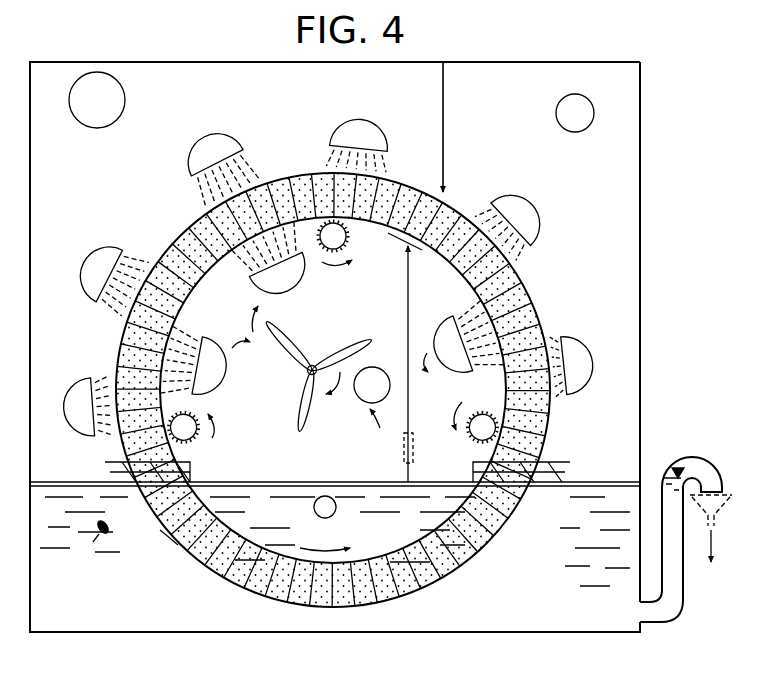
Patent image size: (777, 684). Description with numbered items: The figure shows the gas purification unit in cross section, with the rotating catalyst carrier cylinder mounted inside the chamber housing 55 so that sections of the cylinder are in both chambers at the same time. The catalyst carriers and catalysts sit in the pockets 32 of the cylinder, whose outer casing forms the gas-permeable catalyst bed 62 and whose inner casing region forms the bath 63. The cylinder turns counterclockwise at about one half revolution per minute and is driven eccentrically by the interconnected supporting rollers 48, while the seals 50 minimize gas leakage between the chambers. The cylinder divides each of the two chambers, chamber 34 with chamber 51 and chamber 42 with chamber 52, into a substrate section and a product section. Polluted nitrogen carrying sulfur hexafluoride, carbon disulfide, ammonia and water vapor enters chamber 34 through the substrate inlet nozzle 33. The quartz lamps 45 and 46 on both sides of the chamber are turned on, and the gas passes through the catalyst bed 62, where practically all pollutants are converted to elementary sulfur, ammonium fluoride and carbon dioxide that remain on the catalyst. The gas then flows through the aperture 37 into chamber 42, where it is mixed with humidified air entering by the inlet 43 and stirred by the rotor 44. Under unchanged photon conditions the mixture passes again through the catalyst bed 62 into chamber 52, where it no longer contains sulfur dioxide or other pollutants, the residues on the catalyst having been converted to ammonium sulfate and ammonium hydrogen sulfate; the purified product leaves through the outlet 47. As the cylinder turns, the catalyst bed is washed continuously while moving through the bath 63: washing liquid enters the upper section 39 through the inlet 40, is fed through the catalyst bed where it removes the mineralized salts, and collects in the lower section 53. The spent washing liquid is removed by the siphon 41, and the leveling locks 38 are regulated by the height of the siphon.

The pockets 32 is at (540, 296).
The substrate inlet nozzle 33 is at (556, 116).
The chamber 34 is at (569, 247).
The aperture 37 is at (403, 450).
The seals 38 is at (416, 182).
The upper section of the bath 39 is at (144, 605).
The inlet 40 is at (320, 497).
The siphon 41 is at (690, 456).
The chamber 42 is at (244, 468).
The inlet 43 is at (355, 407).
The rotor 44 is at (318, 343).
The quartz lamps 45 is at (332, 314).
The quartz lamps 46 is at (328, 122).
The outlet 47 is at (126, 102).
The supporting rollers 48 is at (197, 410).
The leveling locks 50 is at (107, 465).
The chamber 51 is at (416, 297).
The chamber 52 is at (89, 212).
The lower section of the bath 53 is at (374, 535).
The chamber housing 55 is at (673, 272).
The catalyst bed 62 is at (173, 540).
The bath 63 is at (98, 533).